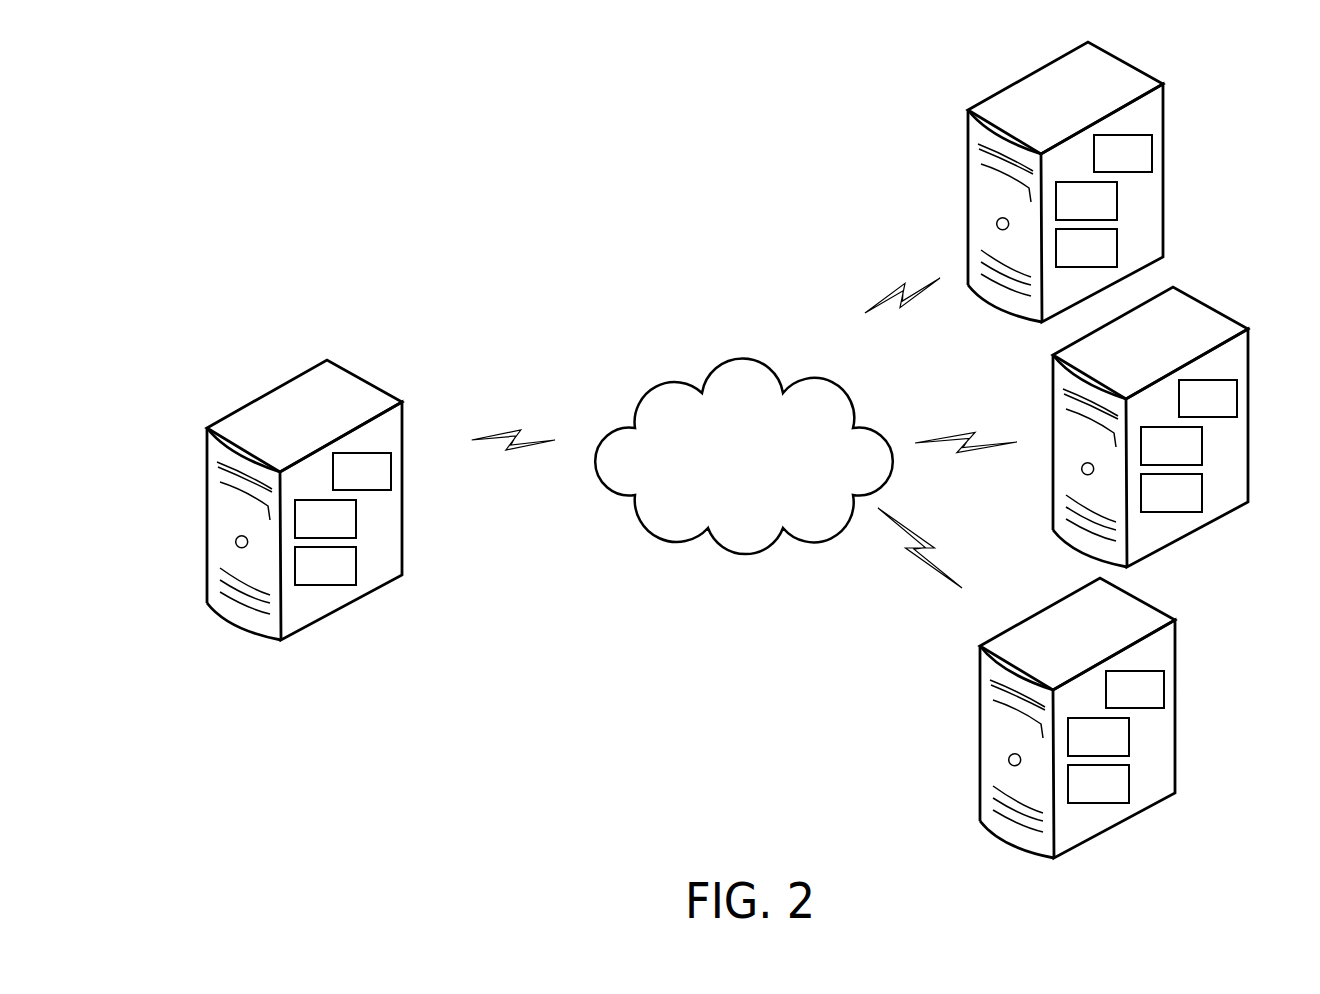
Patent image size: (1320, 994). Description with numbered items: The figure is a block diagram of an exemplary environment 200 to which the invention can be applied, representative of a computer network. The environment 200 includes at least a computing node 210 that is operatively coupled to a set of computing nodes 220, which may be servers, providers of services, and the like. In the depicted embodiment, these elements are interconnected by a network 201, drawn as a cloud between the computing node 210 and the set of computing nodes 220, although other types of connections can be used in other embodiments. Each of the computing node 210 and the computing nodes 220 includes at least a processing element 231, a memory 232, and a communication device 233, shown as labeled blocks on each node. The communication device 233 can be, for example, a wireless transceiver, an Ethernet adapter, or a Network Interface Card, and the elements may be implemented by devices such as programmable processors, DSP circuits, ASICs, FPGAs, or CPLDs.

The environment 200 is at (233, 61).
The network 201 is at (718, 487).
The computing node 210 is at (338, 326).
The set of computing nodes 220 is at (1200, 62).
The processing element 231 is at (338, 486).
The memory 232 is at (302, 531).
The communication device 233 is at (302, 579).